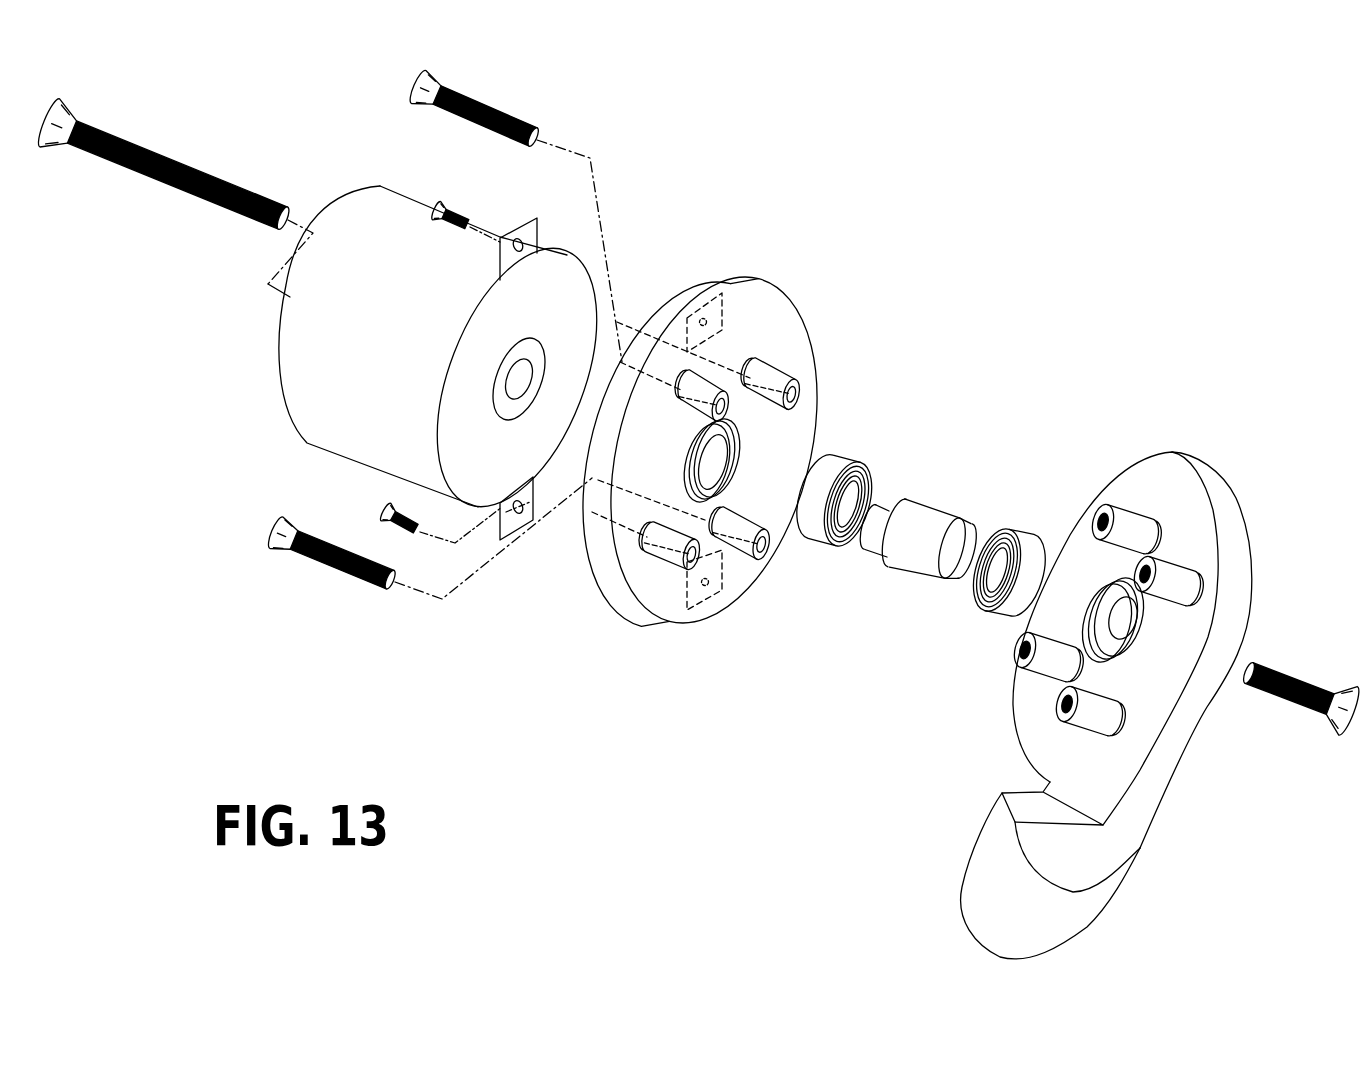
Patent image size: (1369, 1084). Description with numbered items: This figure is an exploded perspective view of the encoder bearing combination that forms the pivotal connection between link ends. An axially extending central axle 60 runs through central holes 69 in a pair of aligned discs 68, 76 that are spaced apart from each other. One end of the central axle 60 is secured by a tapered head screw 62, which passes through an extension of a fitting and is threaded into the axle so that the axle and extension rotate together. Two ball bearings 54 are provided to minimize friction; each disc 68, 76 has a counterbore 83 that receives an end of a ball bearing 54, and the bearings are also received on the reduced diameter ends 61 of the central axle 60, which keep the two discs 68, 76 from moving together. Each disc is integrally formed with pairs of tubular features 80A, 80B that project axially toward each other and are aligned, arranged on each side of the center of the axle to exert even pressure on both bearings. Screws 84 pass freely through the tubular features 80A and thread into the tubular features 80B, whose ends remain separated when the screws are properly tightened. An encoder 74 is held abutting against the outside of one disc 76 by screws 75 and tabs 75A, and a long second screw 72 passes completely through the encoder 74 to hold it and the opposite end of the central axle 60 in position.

The long second screw 72 is at (143, 145).
The screws 84 is at (478, 106).
The encoder 74 is at (376, 220).
The screws 75 is at (452, 210).
The tabs 75A is at (537, 229).
The disc 76 is at (793, 325).
The tubular features 80A is at (784, 377).
The central holes 69 is at (713, 445).
The ball bearings 54 is at (845, 467).
The reduced diameter ends 61 is at (962, 537).
The central axle 60 is at (918, 556).
The counterbore 83 is at (737, 463).
The disc 68 is at (1183, 472).
The tubular features 80B is at (1175, 573).
The tapered head screw 62 is at (1296, 663).